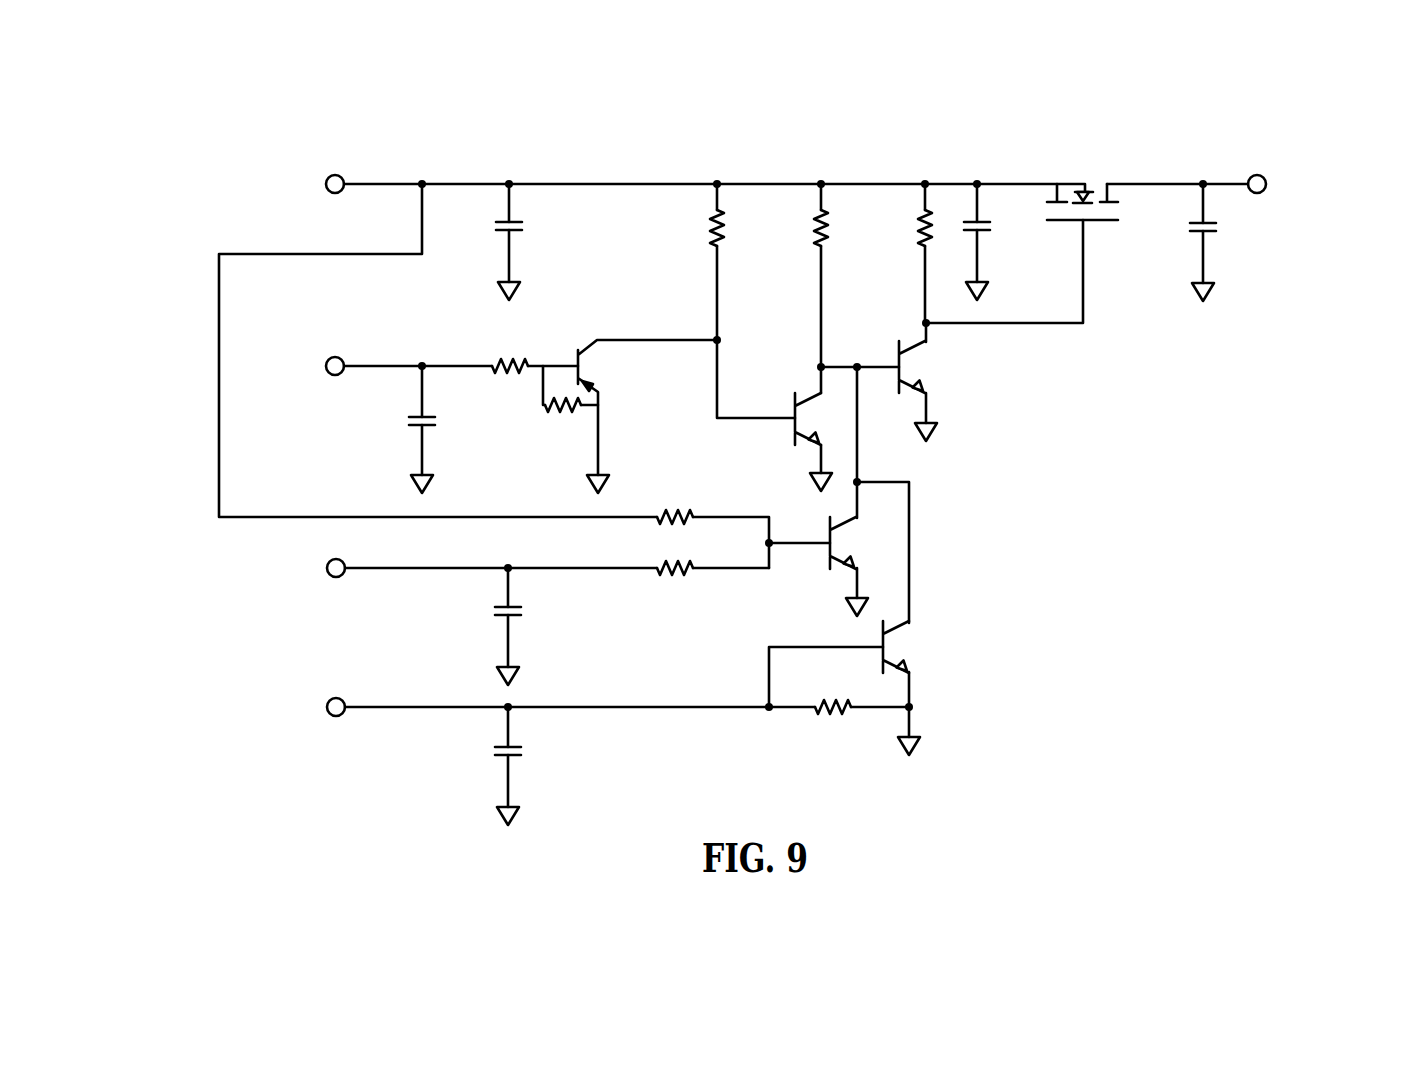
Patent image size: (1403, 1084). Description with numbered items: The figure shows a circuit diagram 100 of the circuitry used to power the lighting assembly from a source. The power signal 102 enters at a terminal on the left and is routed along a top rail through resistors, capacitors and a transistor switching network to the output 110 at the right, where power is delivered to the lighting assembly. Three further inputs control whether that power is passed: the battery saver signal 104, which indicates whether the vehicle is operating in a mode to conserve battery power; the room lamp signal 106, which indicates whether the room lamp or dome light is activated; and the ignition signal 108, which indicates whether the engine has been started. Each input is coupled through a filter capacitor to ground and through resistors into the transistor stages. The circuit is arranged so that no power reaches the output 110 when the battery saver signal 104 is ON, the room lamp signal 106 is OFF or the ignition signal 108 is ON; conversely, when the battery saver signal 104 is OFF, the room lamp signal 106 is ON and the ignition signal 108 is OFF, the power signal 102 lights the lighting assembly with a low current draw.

The circuit diagram 100 is at (1200, 140).
The power signal 102 is at (326, 184).
The battery saver signal 104 is at (326, 366).
The room lamp signal 106 is at (327, 568).
The ignition signal 108 is at (327, 707).
The output 110 is at (1266, 184).